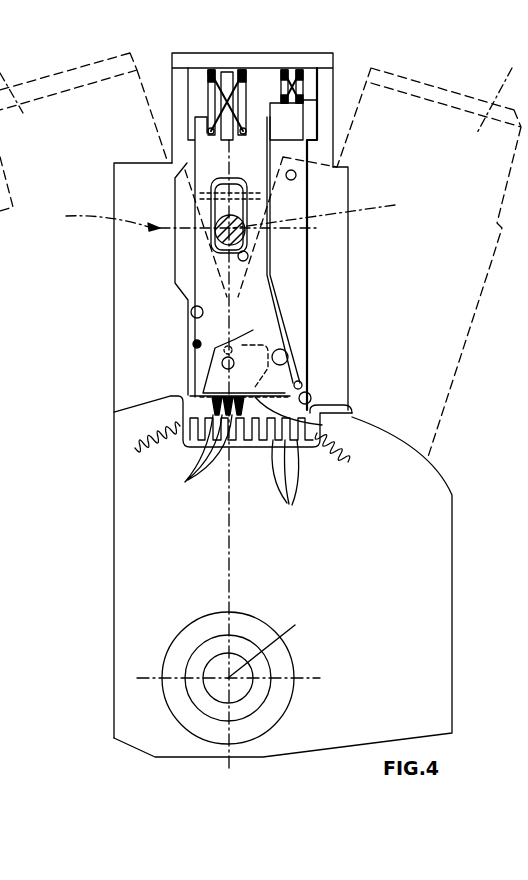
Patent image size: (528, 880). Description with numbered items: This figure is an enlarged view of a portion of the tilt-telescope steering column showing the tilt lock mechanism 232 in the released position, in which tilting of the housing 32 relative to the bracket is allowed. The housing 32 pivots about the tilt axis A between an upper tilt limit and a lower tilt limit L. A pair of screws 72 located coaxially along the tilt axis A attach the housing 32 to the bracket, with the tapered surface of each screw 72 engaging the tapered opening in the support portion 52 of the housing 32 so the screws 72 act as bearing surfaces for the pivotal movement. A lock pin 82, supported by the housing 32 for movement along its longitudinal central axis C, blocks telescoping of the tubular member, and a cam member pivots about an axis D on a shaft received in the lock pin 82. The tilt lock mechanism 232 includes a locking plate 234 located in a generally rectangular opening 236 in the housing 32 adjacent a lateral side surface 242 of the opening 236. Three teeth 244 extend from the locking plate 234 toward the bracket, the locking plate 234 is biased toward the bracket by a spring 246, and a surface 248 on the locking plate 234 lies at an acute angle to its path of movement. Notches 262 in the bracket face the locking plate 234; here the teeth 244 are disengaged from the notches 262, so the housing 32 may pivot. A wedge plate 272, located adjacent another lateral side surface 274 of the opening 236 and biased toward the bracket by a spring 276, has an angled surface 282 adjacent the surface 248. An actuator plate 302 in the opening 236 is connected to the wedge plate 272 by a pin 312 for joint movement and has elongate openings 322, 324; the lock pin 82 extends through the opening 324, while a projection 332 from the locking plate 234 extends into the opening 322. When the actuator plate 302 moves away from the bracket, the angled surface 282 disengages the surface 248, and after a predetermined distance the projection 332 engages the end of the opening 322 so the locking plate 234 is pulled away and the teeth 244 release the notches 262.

The housing 32 is at (344, 68).
The support portion 52 is at (415, 592).
The screws 72 is at (210, 660).
The lock pin 82 is at (215, 233).
The tilt lock mechanism 232 is at (180, 451).
The locking plate 234 is at (346, 410).
The opening 236 is at (191, 312).
The lateral side surface 242 is at (193, 343).
The teeth 244 is at (202, 452).
The spring 246 is at (213, 73).
The surface 248 is at (215, 392).
The notches 262 is at (292, 457).
The wedge plate 272 is at (288, 356).
The lateral side surface 274 is at (311, 401).
The spring 276 is at (304, 77).
The angled surface 282 is at (298, 364).
The actuator plate 302 is at (207, 168).
The pin 312 is at (297, 175).
The elongate opening 322 is at (210, 365).
The elongate opening 324 is at (247, 263).
The projection 332 is at (230, 345).
The tilt axis A is at (272, 644).
The longitudinal central axis of the lock pin C is at (322, 211).
The axis D is at (185, 218).
The lower tilt limit L is at (501, 97).